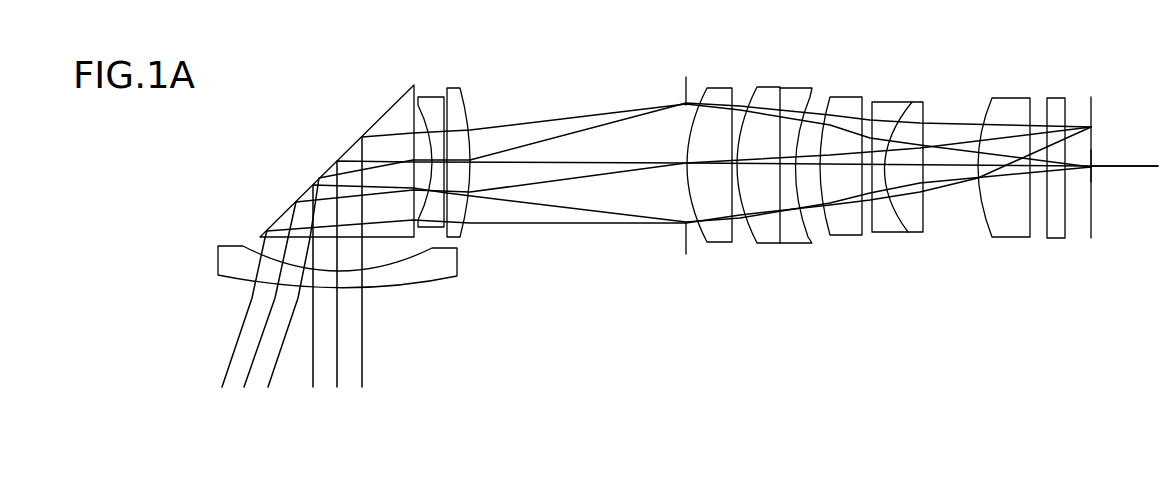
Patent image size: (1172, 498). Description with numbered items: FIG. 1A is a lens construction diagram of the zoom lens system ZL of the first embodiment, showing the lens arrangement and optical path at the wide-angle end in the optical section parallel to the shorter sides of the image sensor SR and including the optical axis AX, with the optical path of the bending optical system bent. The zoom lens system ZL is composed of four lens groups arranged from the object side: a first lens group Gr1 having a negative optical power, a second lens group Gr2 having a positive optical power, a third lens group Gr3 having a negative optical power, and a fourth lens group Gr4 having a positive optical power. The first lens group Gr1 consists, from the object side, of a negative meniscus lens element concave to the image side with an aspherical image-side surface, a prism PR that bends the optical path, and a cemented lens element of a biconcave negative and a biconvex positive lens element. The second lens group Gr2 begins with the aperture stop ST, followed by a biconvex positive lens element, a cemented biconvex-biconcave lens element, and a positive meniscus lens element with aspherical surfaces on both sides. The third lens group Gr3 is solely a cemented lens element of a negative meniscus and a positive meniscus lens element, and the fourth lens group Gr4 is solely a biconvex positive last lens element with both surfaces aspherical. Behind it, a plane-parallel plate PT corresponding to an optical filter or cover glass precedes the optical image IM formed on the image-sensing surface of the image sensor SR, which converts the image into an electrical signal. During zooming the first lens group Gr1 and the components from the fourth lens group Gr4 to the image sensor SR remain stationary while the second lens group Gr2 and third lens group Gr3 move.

The zoom lens system ZL is at (1028, 438).
The first lens group Gr1 is at (477, 388).
The prism PR is at (392, 118).
The aperture stop ST is at (683, 238).
The second lens group Gr2 is at (863, 270).
The third lens group Gr3 is at (938, 270).
The fourth lens group Gr4 is at (1038, 270).
The plane-parallel plate PT is at (1057, 240).
The optical image IM is at (1093, 225).
The optical axis AX is at (1106, 165).
The image sensor SR is at (1135, 200).